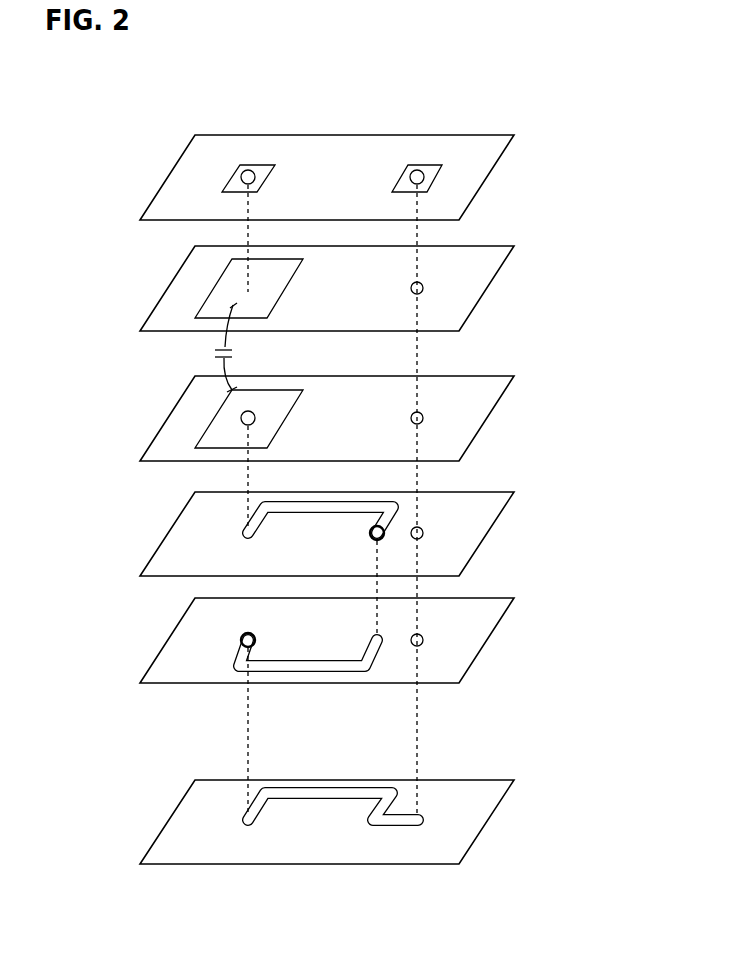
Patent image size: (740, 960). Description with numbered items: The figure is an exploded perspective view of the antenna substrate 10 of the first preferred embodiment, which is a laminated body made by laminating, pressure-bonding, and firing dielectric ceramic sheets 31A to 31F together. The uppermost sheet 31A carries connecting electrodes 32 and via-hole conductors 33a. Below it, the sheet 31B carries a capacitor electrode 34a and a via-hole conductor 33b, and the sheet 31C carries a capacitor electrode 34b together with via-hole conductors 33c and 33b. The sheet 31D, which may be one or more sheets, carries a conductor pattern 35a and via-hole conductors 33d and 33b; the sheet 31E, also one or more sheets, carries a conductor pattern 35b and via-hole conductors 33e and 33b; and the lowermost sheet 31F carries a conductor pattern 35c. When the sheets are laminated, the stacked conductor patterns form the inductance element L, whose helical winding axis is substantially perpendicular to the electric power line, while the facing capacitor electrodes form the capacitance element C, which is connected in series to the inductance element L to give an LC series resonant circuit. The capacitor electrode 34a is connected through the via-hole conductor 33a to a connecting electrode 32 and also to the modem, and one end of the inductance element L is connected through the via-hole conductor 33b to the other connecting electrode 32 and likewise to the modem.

The antenna substrate 10 is at (551, 80).
The dielectric ceramic sheet 31A is at (487, 178).
The dielectric ceramic sheet 31B is at (488, 288).
The dielectric ceramic sheet 31C is at (488, 418).
The dielectric ceramic sheet 31D is at (488, 533).
The dielectric ceramic sheet 31E is at (493, 638).
The dielectric ceramic sheet 31F is at (487, 820).
The connecting electrode 32 is at (258, 162).
The via-hole conductor 33a is at (245, 170).
The via-hole conductor 33b is at (423, 283).
The via-hole conductor 33c is at (257, 415).
The via-hole conductor 33d is at (370, 537).
The via-hole conductor 33e is at (242, 637).
The capacitor electrode 34a is at (218, 293).
The capacitor electrode 34b is at (220, 428).
The conductor pattern 35a is at (290, 514).
The conductor pattern 35b is at (282, 659).
The conductor pattern 35c is at (317, 788).
The capacitance element C is at (234, 347).
The inductance element L is at (220, 728).